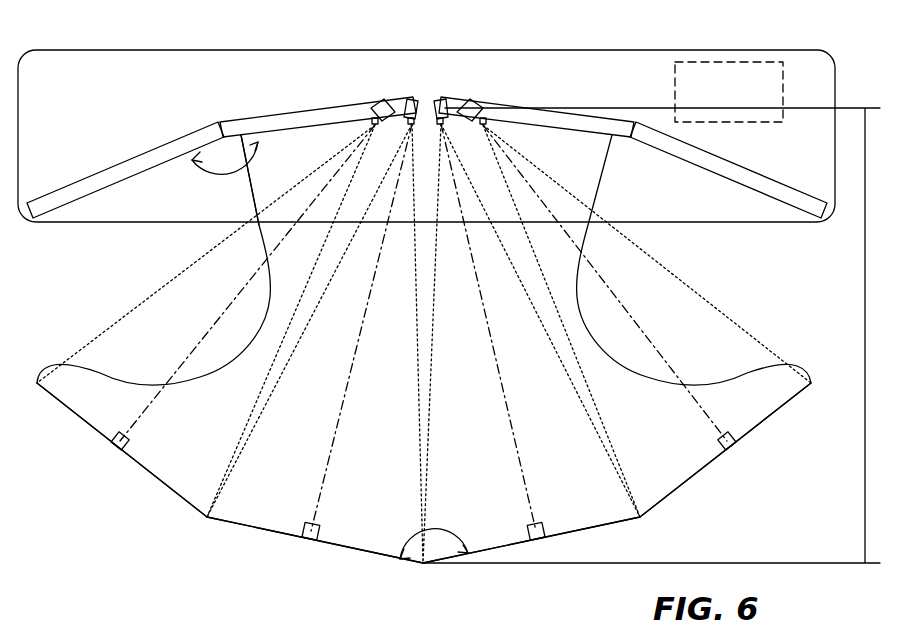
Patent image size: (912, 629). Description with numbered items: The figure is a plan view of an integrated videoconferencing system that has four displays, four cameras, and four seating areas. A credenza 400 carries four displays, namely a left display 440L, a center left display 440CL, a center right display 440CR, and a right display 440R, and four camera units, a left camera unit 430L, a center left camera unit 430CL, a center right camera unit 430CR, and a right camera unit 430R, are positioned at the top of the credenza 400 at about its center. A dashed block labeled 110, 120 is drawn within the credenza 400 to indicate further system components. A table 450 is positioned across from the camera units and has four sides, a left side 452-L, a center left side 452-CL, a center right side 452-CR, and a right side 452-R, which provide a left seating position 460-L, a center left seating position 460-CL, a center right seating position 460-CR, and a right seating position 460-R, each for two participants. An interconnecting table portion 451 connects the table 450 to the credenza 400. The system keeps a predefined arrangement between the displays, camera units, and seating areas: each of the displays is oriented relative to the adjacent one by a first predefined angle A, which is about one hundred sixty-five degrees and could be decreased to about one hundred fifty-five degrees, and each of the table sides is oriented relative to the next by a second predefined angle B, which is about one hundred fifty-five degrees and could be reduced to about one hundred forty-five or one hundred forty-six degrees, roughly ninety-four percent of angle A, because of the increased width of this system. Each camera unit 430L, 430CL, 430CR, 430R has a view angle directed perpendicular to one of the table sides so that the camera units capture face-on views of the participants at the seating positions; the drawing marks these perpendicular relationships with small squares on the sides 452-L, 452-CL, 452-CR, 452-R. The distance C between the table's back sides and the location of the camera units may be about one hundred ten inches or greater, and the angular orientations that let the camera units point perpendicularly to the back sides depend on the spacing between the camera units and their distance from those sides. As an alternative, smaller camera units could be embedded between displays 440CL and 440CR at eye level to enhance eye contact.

The credenza 400 is at (76, 49).
The first device 110 is at (770, 70).
The second device 120 is at (723, 62).
The left display 440L is at (112, 167).
The center left display 440CL is at (248, 119).
The center right display 440CR is at (579, 114).
The right display 440R is at (745, 148).
The left camera unit 430L is at (384, 99).
The center left camera unit 430CL is at (412, 99).
The center right camera unit 430CR is at (443, 99).
The right camera unit 430R is at (473, 99).
The table 450 is at (48, 368).
The interconnecting table portion 451 is at (256, 206).
The left table side 452-L is at (77, 417).
The center left table side 452-CL is at (274, 531).
The center right table side 452-CR is at (595, 527).
The right table side 452-R is at (781, 412).
The left seating position 460-L is at (122, 450).
The center left seating position 460-CL is at (315, 553).
The center right seating position 460-CR is at (531, 554).
The right seating position 460-R is at (725, 450).
The first predefined angle A is at (225, 167).
The second predefined angle B is at (434, 536).
The distance C is at (651, 335).